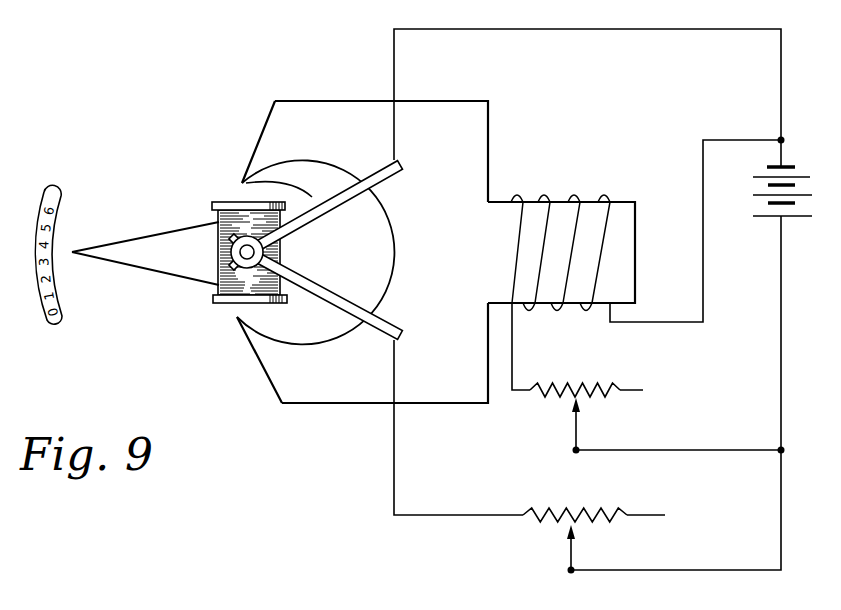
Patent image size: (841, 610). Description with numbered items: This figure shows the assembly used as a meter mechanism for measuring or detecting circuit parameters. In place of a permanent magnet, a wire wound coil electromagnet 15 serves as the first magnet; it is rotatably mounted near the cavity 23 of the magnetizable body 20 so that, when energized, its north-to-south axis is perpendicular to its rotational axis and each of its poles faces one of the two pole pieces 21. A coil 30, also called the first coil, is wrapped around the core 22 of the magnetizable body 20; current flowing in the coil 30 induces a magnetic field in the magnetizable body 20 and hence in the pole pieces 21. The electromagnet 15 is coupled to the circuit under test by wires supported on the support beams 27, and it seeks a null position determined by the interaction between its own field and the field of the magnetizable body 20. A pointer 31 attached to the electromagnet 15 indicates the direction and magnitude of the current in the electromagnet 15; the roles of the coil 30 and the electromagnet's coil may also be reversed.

The electromagnet 15 is at (217, 306).
The magnetizable body 20 is at (497, 142).
The pole pieces 21 is at (288, 101).
The core 22 is at (632, 202).
The cavity 23 is at (246, 184).
The support beams 27 is at (336, 172).
The coil 30 is at (548, 192).
The pointer 31 is at (102, 259).